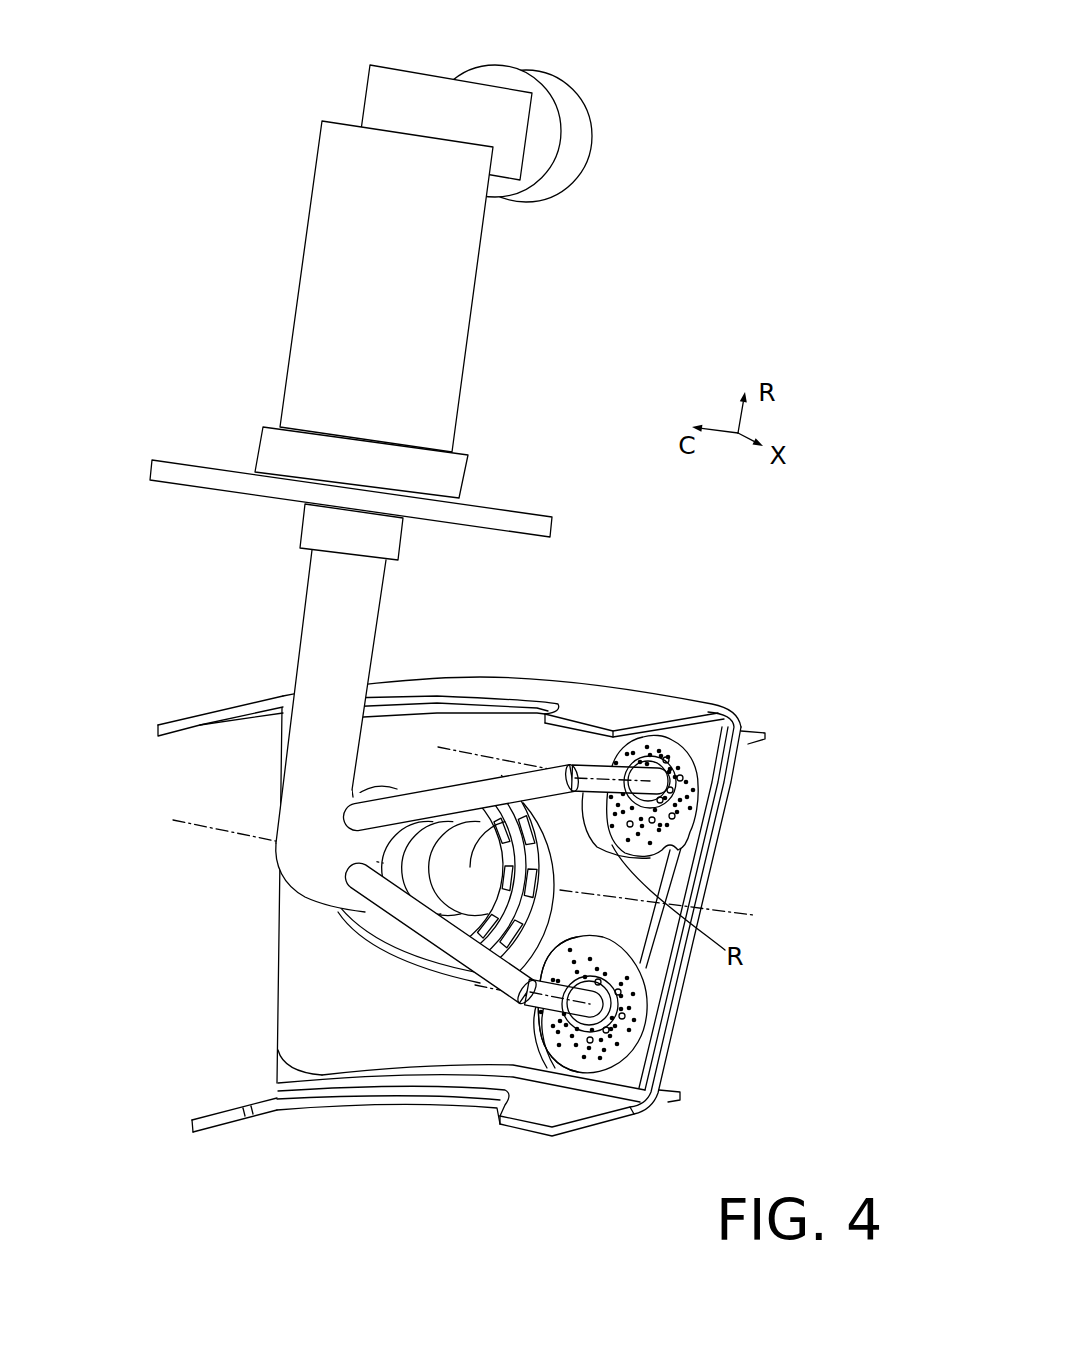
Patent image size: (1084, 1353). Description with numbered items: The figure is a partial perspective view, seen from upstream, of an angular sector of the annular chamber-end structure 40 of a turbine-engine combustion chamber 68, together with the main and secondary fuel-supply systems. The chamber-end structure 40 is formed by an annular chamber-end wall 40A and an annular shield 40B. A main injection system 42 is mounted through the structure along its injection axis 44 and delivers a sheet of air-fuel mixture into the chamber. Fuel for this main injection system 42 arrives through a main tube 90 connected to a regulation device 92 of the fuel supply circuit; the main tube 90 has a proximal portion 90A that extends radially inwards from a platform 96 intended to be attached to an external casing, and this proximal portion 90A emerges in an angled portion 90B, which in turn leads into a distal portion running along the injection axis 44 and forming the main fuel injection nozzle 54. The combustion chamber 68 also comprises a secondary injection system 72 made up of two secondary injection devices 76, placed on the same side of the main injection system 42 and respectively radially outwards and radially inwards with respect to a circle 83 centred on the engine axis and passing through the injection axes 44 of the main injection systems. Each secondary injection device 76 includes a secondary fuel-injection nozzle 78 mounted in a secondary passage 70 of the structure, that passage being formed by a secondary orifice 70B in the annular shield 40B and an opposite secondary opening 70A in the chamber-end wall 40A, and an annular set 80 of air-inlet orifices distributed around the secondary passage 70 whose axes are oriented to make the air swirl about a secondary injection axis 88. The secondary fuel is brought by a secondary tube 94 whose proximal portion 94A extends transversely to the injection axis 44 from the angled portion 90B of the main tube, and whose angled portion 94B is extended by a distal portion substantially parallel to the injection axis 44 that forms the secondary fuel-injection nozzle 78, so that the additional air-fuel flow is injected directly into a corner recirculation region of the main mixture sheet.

The annular chamber-end structure 40 is at (489, 906).
The annular chamber-end wall 40A is at (640, 1066).
The annular shield 40B is at (672, 1032).
The main injection system 42 is at (370, 814).
The injection axis 44 is at (173, 820).
The main fuel injection nozzle 54 is at (407, 847).
The combustion chamber 68 is at (489, 791).
The secondary passage 70 is at (557, 1080).
The secondary opening 70A is at (545, 1052).
The secondary orifice 70B is at (568, 1030).
The secondary injection system 72 is at (709, 979).
The secondary injection device 76 is at (703, 903).
The secondary fuel-injection nozzle 78 is at (660, 777).
The annular set of air-inlet orifices 80 is at (693, 803).
The circle 83 is at (727, 907).
The secondary injection axis 88 is at (493, 750).
The main tube 90 is at (279, 708).
The proximal portion 90A is at (313, 617).
The angled portion 90B is at (300, 870).
The regulation device 92 is at (478, 287).
The secondary tube 94 is at (390, 900).
The proximal portion 94A is at (445, 795).
The angled portion 94B is at (572, 770).
The platform 96 is at (503, 517).